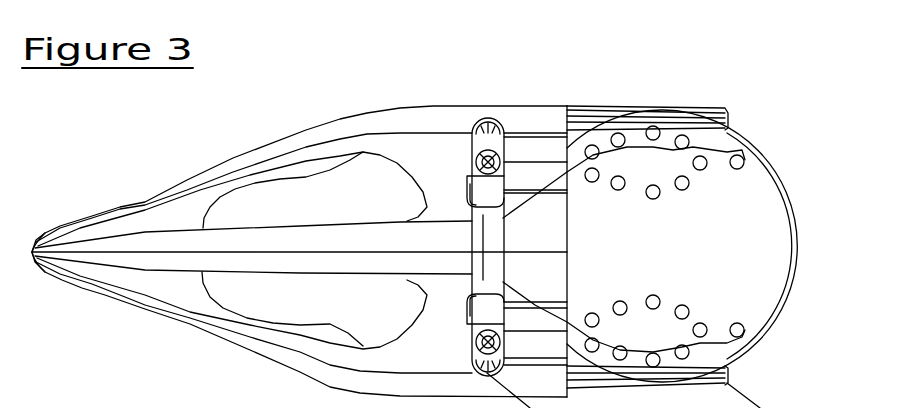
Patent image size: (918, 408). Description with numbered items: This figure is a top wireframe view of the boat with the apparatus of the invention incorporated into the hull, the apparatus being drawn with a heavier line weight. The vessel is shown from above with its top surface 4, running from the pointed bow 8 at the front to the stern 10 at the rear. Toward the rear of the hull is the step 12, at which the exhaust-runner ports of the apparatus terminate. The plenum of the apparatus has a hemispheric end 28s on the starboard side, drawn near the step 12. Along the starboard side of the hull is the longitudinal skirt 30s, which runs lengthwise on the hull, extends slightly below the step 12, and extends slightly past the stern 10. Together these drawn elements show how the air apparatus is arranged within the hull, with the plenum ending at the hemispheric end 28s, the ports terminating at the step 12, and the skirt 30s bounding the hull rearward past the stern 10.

The top surface 4 is at (185, 240).
The bow 8 is at (40, 243).
The stern 10 is at (663, 246).
The step 12 is at (573, 275).
The hemispheric end 28s is at (487, 122).
The longitudinal skirt 30s is at (722, 112).